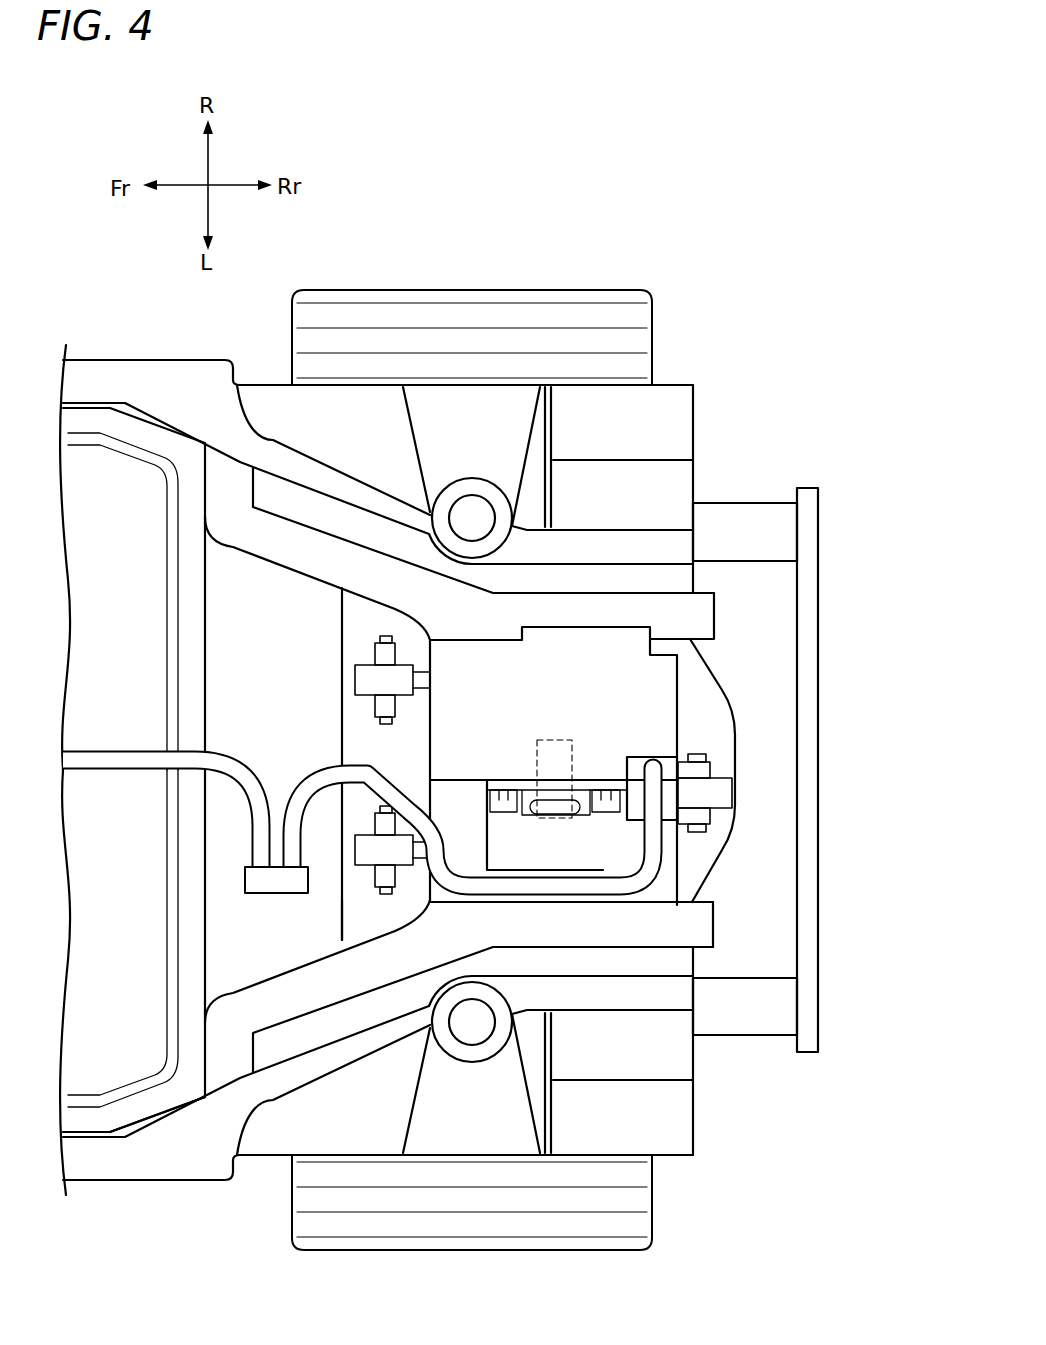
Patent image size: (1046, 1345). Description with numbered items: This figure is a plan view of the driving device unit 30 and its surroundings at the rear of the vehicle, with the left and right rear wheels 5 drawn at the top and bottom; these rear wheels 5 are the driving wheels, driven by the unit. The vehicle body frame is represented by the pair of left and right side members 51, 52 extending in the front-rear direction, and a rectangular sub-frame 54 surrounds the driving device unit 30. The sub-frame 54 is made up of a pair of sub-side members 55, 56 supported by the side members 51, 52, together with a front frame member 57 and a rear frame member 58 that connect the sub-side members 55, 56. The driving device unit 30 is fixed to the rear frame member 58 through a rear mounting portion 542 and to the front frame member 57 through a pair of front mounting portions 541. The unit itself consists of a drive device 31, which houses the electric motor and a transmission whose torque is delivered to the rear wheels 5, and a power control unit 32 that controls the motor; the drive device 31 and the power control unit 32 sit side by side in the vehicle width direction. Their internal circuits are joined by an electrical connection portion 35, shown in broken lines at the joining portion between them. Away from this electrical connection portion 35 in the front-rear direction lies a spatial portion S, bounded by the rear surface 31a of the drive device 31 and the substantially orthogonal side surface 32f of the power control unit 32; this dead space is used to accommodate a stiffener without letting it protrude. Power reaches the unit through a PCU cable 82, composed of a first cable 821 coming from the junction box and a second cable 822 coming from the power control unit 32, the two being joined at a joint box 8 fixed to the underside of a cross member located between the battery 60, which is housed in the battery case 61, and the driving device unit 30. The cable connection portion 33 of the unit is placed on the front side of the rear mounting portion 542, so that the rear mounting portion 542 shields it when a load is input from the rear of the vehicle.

The rear wheels 5 is at (653, 343).
The joint box 8 is at (273, 893).
The driving device unit 30 is at (668, 875).
The drive device 31 is at (678, 852).
The rear surface of the drive device 31a is at (633, 815).
The power control unit (PCU) 32 is at (678, 720).
The side surface of the PCU 32f is at (680, 792).
The cable connection portion 33 is at (651, 757).
The electrical connection portion 35 is at (537, 767).
The side member 51 is at (152, 360).
The side member 52 is at (100, 1180).
The sub-frame 54 is at (732, 696).
The front mounting portions 541 is at (363, 680).
The rear mounting portion 542 is at (732, 795).
The sub-side member 55 is at (623, 593).
The sub-side member 56 is at (672, 947).
The front frame member 57 is at (340, 925).
The rear frame member 58 is at (718, 678).
The battery 60 is at (157, 1157).
The battery case 61 is at (140, 1120).
The PCU cable 82 is at (450, 864).
The first cable 821 is at (105, 770).
The second cable 822 is at (643, 867).
The spatial portion S is at (630, 794).